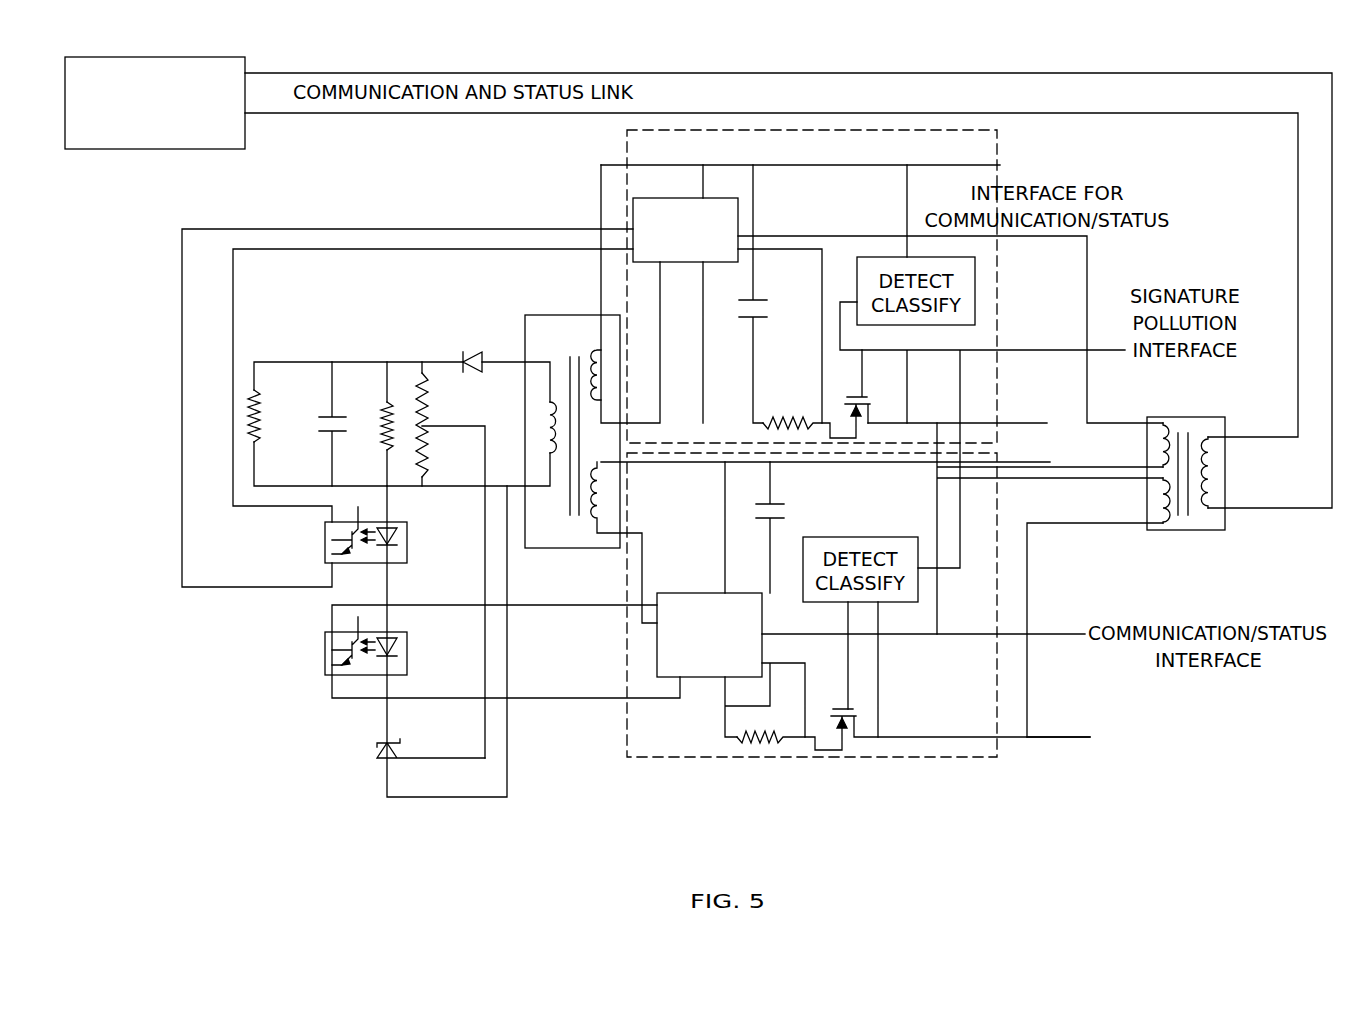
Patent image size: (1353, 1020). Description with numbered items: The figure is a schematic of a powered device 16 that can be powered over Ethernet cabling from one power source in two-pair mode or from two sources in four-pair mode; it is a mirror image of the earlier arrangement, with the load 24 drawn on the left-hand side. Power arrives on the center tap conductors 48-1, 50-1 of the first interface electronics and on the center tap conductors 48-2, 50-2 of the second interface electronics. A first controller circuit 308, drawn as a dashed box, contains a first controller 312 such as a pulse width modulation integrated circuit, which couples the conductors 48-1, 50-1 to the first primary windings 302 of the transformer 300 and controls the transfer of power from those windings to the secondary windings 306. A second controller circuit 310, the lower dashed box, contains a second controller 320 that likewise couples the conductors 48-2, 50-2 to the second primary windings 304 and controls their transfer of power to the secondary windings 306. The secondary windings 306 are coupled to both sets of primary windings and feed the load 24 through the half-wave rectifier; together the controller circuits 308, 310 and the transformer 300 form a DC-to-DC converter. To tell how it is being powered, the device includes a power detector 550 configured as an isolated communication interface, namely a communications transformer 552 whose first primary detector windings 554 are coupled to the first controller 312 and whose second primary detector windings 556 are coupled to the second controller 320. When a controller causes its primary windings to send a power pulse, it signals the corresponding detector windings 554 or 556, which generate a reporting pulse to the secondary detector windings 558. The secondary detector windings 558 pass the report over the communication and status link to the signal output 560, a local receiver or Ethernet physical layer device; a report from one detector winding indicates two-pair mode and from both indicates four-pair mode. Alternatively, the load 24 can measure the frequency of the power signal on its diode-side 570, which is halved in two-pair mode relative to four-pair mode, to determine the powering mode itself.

The powered device 16 is at (158, 346).
The load 24 is at (253, 440).
The center tap conductor 48-1 is at (948, 165).
The center tap conductor 48-2 is at (978, 462).
The center tap conductor 50-1 is at (978, 423).
The center tap conductor 50-2 is at (1060, 737).
The transformer 300 is at (540, 442).
The first primary windings 302 is at (597, 350).
The second primary windings 304 is at (590, 503).
The secondary windings 306 is at (547, 410).
The first controller circuit 308 is at (958, 130).
The second controller circuit 310 is at (783, 757).
The first controller 312 is at (633, 212).
The second controller 320 is at (657, 637).
The power detector 550 is at (1232, 376).
The communications transformer 552 is at (1195, 477).
The first primary detector windings 554 is at (1163, 448).
The second primary detector windings 556 is at (1163, 507).
The secondary detector windings 558 is at (1208, 468).
The signal output 560 is at (163, 57).
The diode-side 570 is at (339, 531).